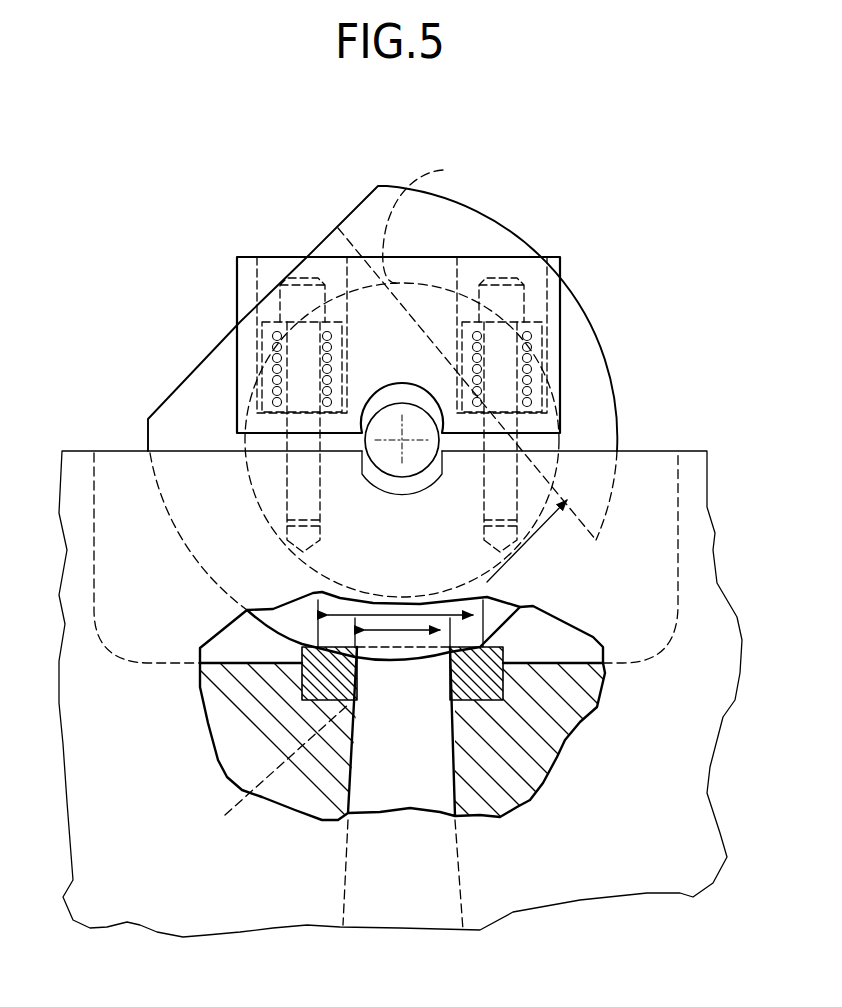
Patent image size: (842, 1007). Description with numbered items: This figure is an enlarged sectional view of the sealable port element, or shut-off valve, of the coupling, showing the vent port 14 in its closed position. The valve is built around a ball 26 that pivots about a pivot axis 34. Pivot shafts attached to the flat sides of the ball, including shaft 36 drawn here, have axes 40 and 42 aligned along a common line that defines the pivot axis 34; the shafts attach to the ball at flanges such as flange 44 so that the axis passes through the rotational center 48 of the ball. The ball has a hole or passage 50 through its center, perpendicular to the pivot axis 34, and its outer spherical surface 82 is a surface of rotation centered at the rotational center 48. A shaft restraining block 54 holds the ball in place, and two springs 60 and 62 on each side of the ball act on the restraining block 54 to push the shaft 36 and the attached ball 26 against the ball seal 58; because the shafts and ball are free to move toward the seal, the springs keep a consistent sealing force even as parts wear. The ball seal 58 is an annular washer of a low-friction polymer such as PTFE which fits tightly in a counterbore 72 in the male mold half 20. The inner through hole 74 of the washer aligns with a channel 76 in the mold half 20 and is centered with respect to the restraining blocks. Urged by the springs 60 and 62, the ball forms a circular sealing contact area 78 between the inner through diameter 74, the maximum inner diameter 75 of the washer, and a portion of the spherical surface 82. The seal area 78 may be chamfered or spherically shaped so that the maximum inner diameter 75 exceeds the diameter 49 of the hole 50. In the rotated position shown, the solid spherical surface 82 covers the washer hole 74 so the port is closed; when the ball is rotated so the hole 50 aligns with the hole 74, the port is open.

The vent port 14 is at (350, 197).
The male mold half 20 is at (278, 662).
The ball 26 is at (495, 212).
The pivot axis 34 is at (535, 424).
The pivot shaft 36 is at (402, 482).
The axis of pivot shaft 40 is at (535, 424).
The axis of pivot shaft 42 is at (535, 424).
The flange 44 is at (386, 411).
The rotational center of the ball 48 is at (405, 440).
The diameter of hole 49 is at (517, 560).
The hole or passage 50 is at (583, 515).
The shaft restraining block 54 is at (268, 256).
The ball seal 58 is at (270, 633).
The spring 60 is at (262, 322).
The spring 62 is at (540, 325).
The counterbore 72 is at (365, 675).
The inner through hole 74 is at (410, 628).
The maximum inner diameter 75 is at (368, 612).
The channel 76 is at (350, 790).
The circular sealing contact area 78 is at (272, 769).
The spherical surface of the ball 82 is at (372, 662).